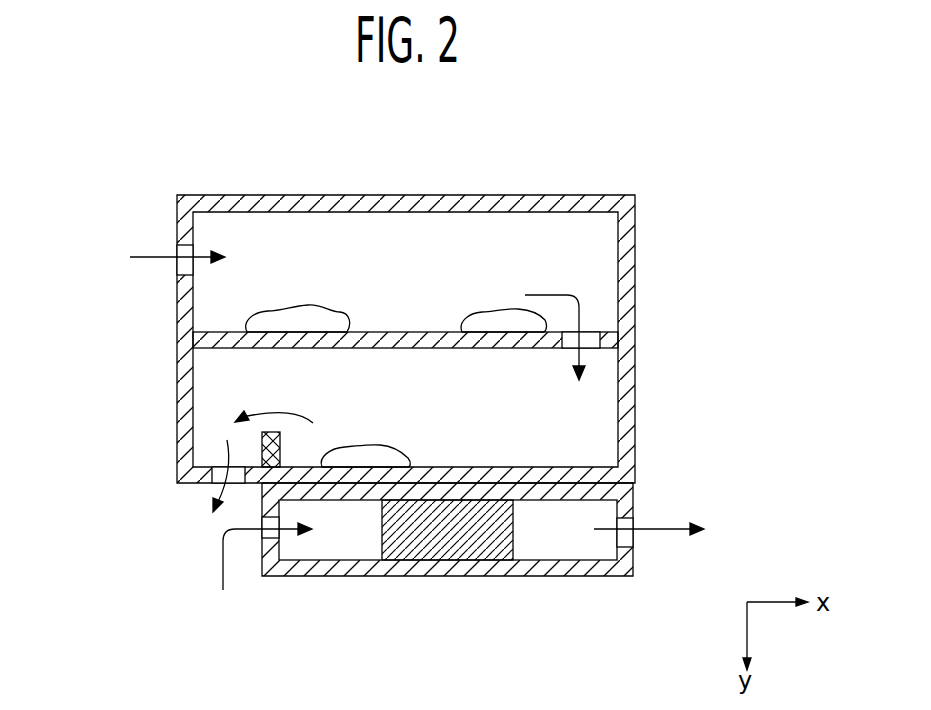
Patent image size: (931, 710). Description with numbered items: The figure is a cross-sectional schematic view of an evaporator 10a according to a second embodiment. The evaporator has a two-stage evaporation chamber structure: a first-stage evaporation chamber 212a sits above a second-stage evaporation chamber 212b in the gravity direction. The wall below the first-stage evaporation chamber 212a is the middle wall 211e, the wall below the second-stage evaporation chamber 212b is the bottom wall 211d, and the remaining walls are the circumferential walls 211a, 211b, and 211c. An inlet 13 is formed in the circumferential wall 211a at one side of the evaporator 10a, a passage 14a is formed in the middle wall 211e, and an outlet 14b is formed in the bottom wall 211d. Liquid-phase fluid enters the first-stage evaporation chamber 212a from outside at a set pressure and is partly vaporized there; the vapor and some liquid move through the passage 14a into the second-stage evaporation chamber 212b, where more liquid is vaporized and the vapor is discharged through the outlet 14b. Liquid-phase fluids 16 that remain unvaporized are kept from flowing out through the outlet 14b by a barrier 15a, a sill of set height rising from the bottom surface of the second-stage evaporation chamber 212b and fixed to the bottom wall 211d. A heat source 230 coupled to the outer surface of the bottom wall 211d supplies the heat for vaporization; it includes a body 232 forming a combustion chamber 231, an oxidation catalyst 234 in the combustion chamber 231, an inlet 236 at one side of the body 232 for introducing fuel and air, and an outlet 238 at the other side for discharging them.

The evaporator 10a is at (252, 150).
The inlet 13 is at (187, 245).
The liquid-phase fluids 16 is at (258, 323).
The first-stage evaporation chamber 212a is at (417, 236).
The circumferential wall 211c is at (552, 205).
The circumferential wall 211b is at (628, 262).
The passage 14a is at (590, 343).
The middle wall 211e is at (563, 392).
The bottom wall 211d is at (565, 473).
The heat source 230 is at (646, 492).
The outlet 238 is at (628, 540).
The circumferential wall 211a is at (183, 380).
The barrier 15a is at (262, 447).
The second-stage evaporation chamber 212b is at (200, 456).
The outlet 14b is at (212, 488).
The inlet 236 is at (268, 540).
The oxidation catalyst 234 is at (457, 545).
The combustion chamber 231 is at (583, 543).
The body 232 is at (623, 572).